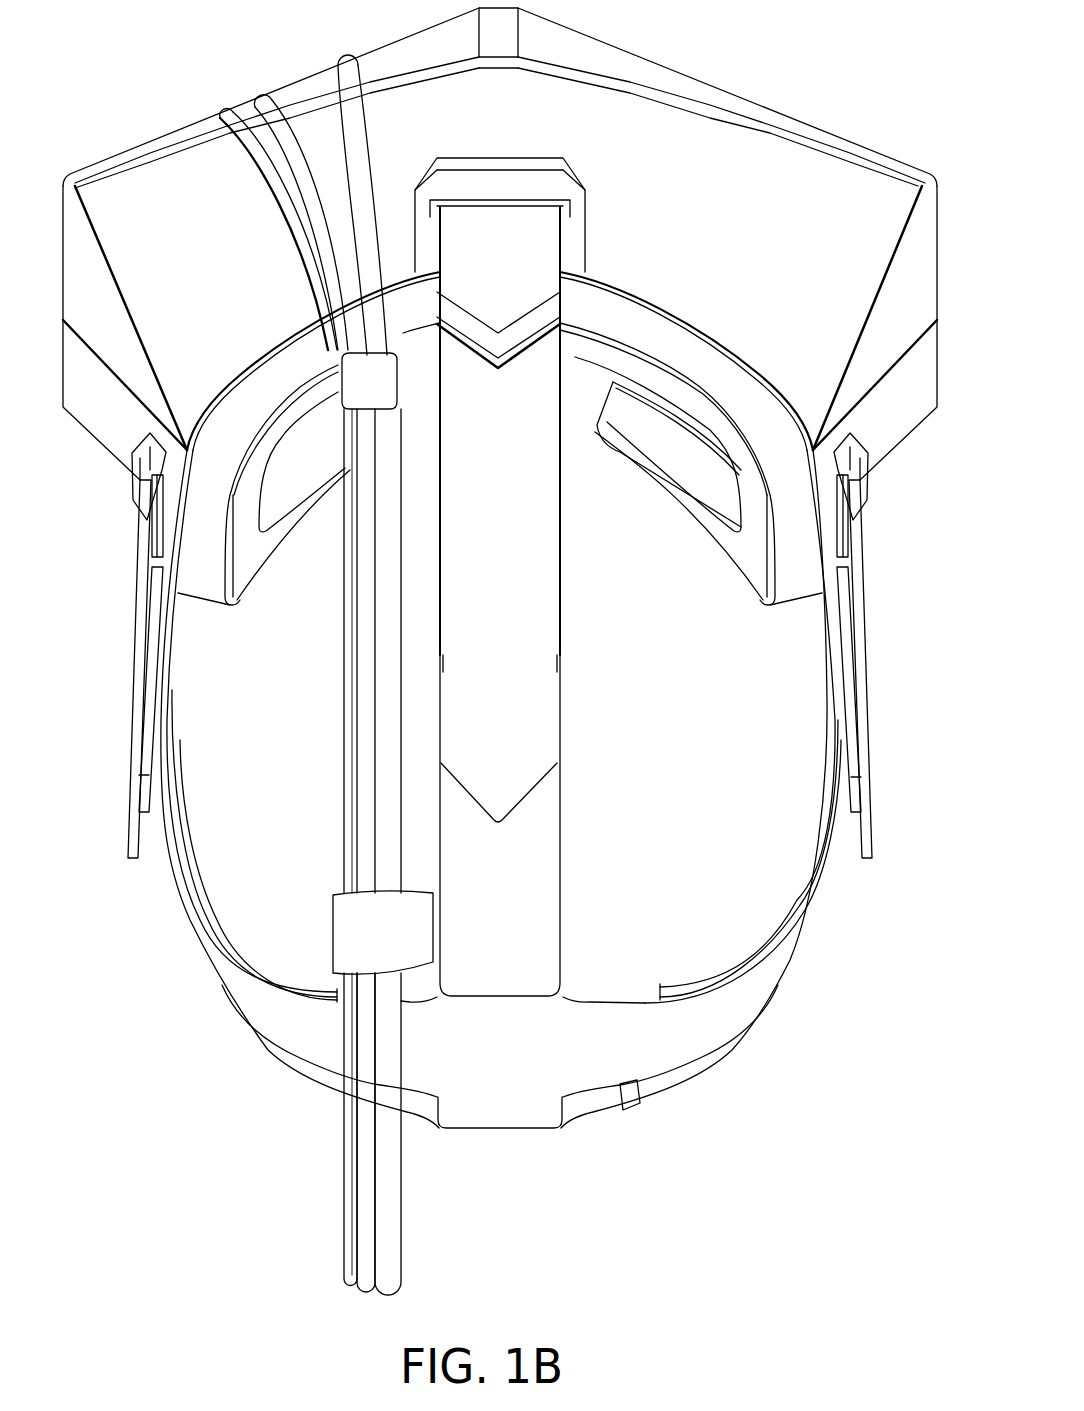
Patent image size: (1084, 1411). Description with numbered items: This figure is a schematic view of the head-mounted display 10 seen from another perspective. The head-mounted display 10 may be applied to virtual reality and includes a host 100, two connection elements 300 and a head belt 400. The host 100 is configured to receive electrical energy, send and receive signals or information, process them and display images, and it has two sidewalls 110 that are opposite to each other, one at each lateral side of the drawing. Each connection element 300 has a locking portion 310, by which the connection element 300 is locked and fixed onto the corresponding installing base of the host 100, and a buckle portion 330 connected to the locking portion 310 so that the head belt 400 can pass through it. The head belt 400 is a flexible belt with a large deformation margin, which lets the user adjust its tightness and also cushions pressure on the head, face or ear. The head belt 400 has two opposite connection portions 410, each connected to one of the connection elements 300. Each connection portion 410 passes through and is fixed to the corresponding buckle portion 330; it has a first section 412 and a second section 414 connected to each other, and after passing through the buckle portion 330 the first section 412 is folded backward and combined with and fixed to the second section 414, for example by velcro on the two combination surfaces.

The head-mounted display 10 is at (870, 1277).
The host 100 is at (499, 243).
The sidewall 110 is at (85, 407).
The connection element 300 is at (502, 525).
The locking portion 310 is at (147, 467).
The buckle portion 330 is at (157, 513).
The head belt 400 is at (283, 1013).
The connection portion 410 is at (502, 697).
The first section 412 is at (143, 673).
The second section 414 is at (162, 667).